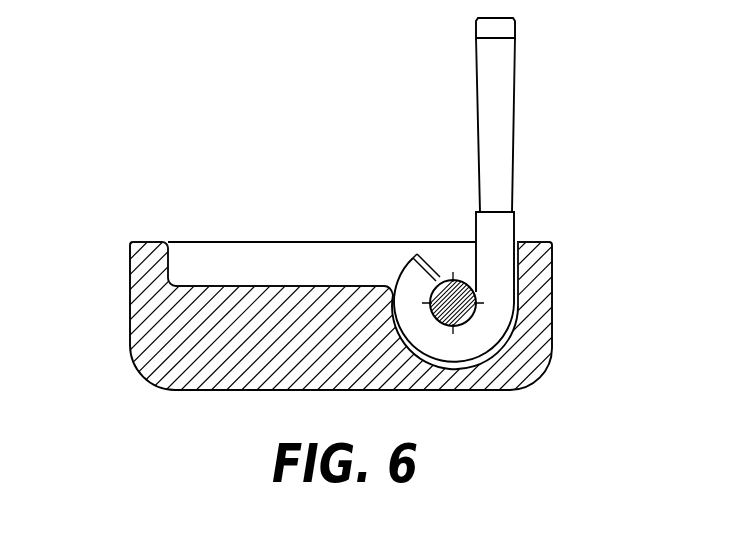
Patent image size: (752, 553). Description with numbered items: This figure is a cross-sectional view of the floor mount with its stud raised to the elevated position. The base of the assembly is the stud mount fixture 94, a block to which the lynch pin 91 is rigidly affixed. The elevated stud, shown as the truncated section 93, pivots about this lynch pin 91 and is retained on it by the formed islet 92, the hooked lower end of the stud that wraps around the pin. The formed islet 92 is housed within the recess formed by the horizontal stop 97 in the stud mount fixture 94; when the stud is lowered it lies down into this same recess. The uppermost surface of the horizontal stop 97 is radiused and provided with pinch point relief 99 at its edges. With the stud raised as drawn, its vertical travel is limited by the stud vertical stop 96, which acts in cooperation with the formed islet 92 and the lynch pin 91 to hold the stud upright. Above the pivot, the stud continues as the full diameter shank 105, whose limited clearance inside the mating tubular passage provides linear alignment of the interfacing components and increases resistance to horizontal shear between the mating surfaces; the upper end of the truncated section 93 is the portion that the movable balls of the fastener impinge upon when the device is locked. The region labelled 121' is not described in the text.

The stud mount fixture 94 is at (130, 322).
The horizontal stop 97 is at (242, 288).
The pinch point relief 99 is at (166, 243).
The truncated section 93 is at (505, 97).
The upper shaft portion 121' is at (442, 75).
The full diameter shank 105 is at (475, 226).
The stud vertical stop 96 is at (519, 243).
The formed islet 92 is at (472, 365).
The lynch pin 91 is at (470, 316).